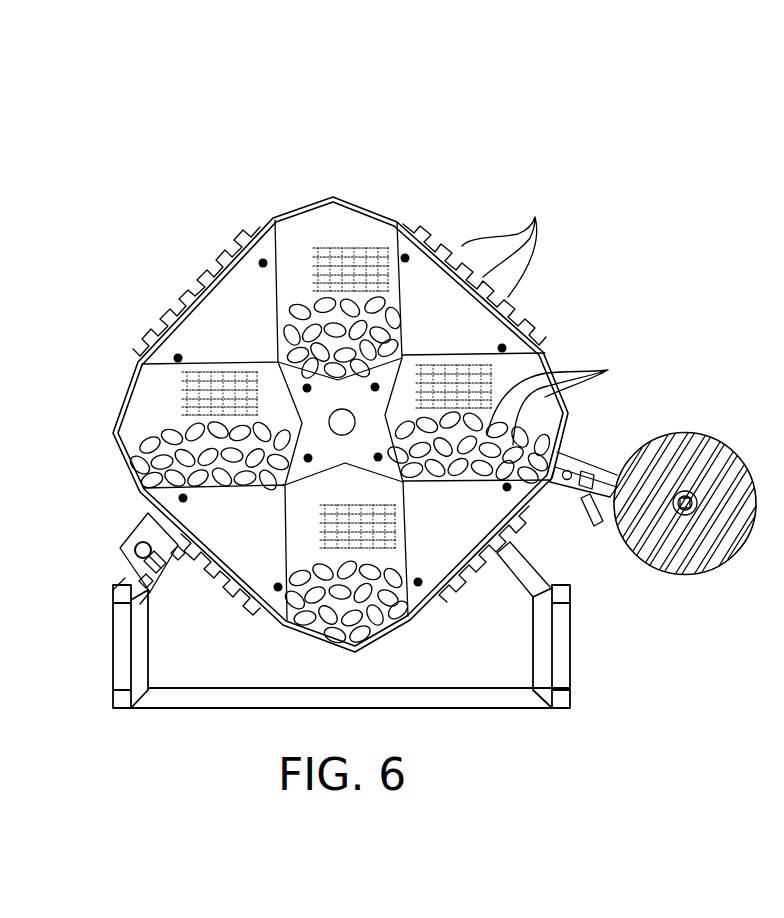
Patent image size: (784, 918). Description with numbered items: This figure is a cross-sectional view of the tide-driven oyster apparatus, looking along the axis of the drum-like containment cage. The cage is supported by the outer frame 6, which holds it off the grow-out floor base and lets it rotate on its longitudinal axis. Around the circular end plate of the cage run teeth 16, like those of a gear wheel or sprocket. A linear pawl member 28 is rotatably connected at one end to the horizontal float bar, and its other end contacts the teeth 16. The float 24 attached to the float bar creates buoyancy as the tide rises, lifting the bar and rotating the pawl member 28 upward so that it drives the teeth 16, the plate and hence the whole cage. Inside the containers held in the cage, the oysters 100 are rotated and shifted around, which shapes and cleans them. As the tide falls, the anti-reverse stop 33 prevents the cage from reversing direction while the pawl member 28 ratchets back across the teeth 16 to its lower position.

The teeth 16 is at (535, 217).
The oysters 100 is at (559, 396).
The pawl member 28 is at (590, 453).
The float 24 is at (707, 450).
The anti-reverse stop 33 is at (128, 562).
The outer frame 6 is at (560, 655).